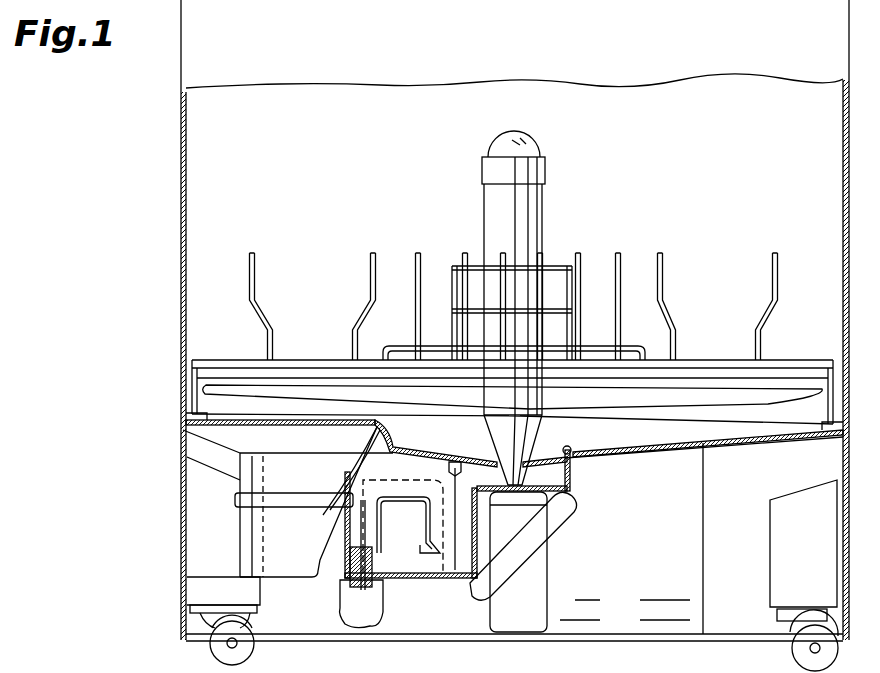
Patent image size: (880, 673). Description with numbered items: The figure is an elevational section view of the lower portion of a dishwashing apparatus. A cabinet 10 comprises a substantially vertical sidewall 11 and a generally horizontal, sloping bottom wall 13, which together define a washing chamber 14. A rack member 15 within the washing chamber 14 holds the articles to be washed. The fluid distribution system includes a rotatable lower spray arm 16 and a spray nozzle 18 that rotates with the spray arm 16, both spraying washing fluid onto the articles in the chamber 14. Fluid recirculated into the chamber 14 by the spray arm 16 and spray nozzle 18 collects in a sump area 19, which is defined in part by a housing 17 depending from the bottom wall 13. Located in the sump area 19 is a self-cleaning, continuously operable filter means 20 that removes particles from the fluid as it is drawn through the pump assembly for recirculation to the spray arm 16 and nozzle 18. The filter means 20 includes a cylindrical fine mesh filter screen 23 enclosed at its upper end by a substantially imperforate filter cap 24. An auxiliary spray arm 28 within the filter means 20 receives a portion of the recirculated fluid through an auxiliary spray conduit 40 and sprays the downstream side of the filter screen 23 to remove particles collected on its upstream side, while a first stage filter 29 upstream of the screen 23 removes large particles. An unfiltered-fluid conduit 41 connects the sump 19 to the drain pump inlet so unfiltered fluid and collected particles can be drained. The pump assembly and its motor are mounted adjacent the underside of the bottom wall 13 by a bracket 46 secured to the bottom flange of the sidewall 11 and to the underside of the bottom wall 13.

The cabinet 10 is at (157, 366).
The sidewall 11 is at (186, 216).
The bottom wall 13 is at (232, 427).
The washing chamber 14 is at (332, 173).
The rack member 15 is at (272, 341).
The lower spray arm 16 is at (760, 403).
The housing 17 is at (398, 583).
The spray nozzle 18 is at (540, 150).
The sump area 19 is at (455, 448).
The filter means 20 is at (400, 469).
The filter screen 23 is at (447, 568).
The filter cap 24 is at (393, 442).
The auxiliary spray arm 28 is at (418, 520).
The first stage filter 29 is at (475, 452).
The auxiliary spray conduit 40 is at (358, 618).
The unfiltered-fluid conduit 41 is at (545, 548).
The bracket 46 is at (680, 552).